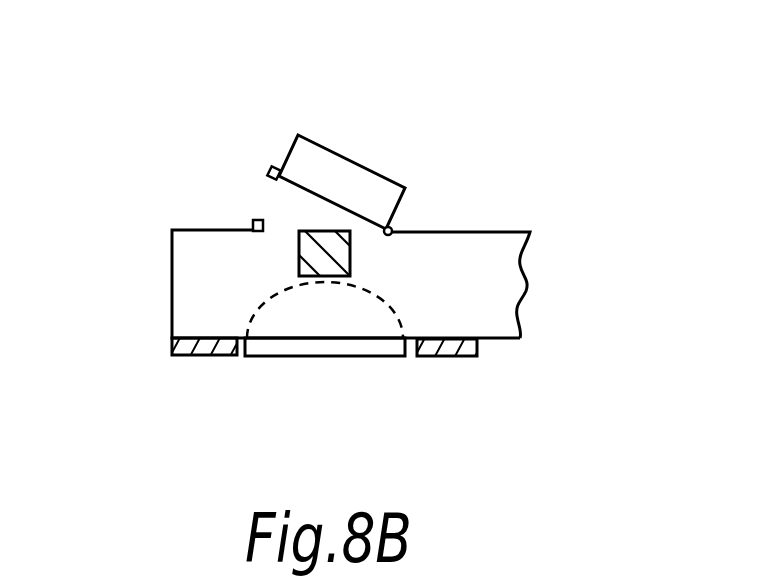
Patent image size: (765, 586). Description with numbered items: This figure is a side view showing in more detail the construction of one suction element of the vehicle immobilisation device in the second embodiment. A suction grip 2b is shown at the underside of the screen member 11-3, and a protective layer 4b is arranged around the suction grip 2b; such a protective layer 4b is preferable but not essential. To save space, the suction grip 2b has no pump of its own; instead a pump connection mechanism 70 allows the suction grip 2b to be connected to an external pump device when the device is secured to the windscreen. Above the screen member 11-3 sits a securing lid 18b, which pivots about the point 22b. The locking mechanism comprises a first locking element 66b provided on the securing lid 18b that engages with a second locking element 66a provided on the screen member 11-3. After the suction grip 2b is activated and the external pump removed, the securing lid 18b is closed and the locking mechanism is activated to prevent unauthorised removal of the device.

The screen member 11-3 is at (172, 278).
The second locking element 66a is at (257, 220).
The first locking element 66b is at (268, 169).
The securing lid 18b is at (353, 162).
The hinge / pivot 22b is at (393, 231).
The pump connection mechanism 70 is at (308, 250).
The protective layer 4b is at (201, 356).
The suction grip 2b is at (320, 347).